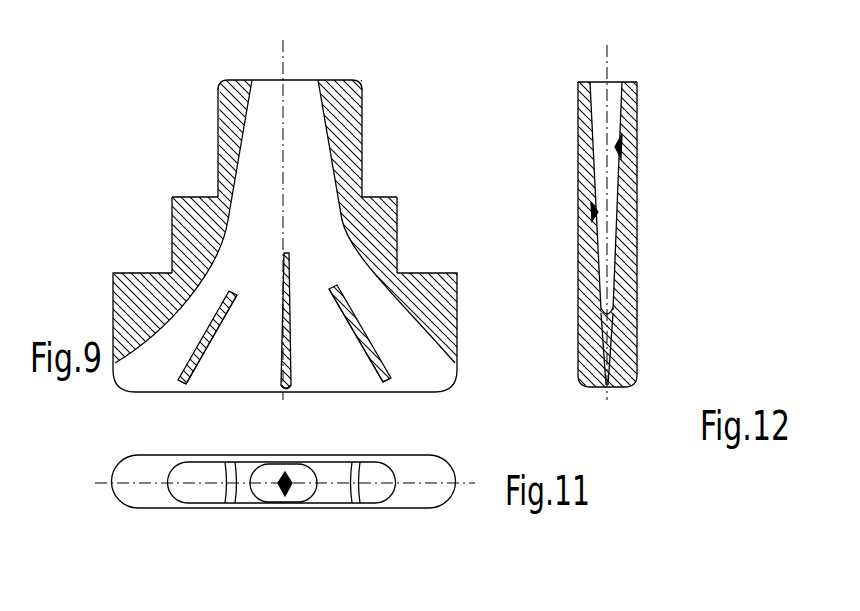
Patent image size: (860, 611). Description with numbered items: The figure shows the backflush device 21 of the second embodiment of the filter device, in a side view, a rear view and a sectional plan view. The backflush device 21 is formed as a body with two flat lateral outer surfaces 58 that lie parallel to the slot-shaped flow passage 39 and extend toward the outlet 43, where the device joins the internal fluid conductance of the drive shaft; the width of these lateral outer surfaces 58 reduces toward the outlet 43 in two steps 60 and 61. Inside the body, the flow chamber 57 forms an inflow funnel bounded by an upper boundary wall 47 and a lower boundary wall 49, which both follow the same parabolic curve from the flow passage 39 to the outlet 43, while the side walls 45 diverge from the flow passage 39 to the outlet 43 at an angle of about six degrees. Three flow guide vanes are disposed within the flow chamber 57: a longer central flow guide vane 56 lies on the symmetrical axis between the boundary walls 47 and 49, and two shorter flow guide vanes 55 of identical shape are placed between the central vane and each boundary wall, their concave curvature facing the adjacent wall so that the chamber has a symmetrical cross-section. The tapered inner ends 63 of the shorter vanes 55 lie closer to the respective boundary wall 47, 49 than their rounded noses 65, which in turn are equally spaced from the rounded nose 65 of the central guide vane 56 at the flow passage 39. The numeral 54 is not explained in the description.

In FIG. 9, the backflush device 21 is at (122, 212).
In FIG. 11, the backflush device 21 is at (132, 510).
In FIG. 12, the backflush device 21 is at (637, 195).
In FIG. 9, the flow passage 39 is at (243, 200).
In FIG. 12, the flow passage 39 is at (608, 390).
In FIG. 9, the outlet 43 is at (255, 81).
In FIG. 11, the outlet 43 is at (288, 497).
In FIG. 12, the outlet 43 is at (620, 78).
In FIG. 12, the side walls 45 is at (628, 133).
In FIG. 9, the upper boundary wall 47 is at (172, 217).
In FIG. 9, the lower boundary wall 49 is at (356, 245).
In FIG. 9, the bottom edge 54 is at (118, 382).
In FIG. 12, the bottom edge 54 is at (625, 391).
In FIG. 9, the flow guide vanes 55 is at (210, 341).
In FIG. 9, the central flow guide vane 56 is at (282, 347).
In FIG. 9, the flow chamber 57 is at (300, 172).
In FIG. 12, the flow chamber 57 is at (592, 118).
In FIG. 11, the lateral outer surfaces 58 is at (207, 455).
In FIG. 12, the lateral outer surfaces 58 is at (578, 186).
In FIG. 9, the step 60 is at (143, 273).
In FIG. 11, the step 60 is at (142, 473).
In FIG. 9, the step 61 is at (200, 195).
In FIG. 11, the step 61 is at (188, 508).
In FIG. 9, the tapered inner ends 63 is at (240, 291).
In FIG. 9, the rounded noses 65 is at (190, 388).